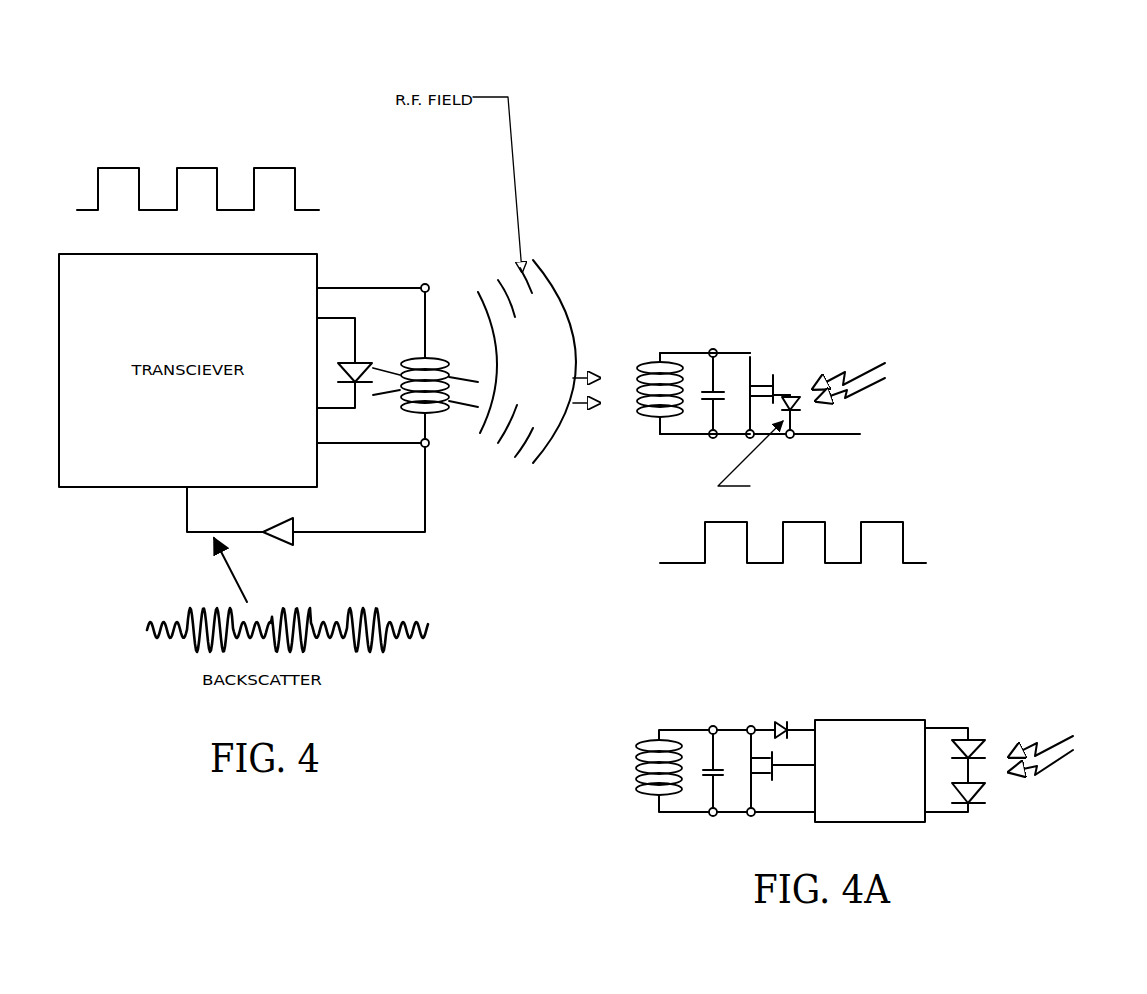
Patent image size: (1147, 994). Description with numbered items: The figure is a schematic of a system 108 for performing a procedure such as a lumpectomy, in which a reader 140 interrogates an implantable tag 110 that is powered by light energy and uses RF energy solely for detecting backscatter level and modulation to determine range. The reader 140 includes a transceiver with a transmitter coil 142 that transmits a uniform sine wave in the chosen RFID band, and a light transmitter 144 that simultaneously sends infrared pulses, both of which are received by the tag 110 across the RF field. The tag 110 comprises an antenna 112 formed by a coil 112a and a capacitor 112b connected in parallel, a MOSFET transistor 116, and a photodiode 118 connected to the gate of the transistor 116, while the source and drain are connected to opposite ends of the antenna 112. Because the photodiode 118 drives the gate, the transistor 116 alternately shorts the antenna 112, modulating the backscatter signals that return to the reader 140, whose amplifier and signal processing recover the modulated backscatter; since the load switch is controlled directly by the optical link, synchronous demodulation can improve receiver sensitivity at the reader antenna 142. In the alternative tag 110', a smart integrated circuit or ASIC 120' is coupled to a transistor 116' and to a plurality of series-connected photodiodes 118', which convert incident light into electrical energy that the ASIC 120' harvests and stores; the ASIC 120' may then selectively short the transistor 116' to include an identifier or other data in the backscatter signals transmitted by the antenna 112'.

In FIG. 4, the system 108 is at (630, 158).
In FIG. 4, the tag 110 is at (861, 378).
In FIG. 4, the antenna 112 is at (692, 427).
In FIG. 4, the coil 112a is at (652, 363).
In FIG. 4, the capacitor 112b is at (715, 378).
In FIG. 4, the transistor 116 is at (784, 345).
In FIG. 4, the photodiode 118 is at (832, 429).
In FIG. 4, the reader 140 is at (137, 122).
In FIG. 4, the transmitter coil 142 is at (438, 413).
In FIG. 4, the light transmitter 144 is at (361, 350).
In FIG. 4A, the tag 110' is at (839, 716).
In FIG. 4A, the antenna 112' is at (639, 814).
In FIG. 4A, the transistor 116' is at (749, 801).
In FIG. 4A, the photodiodes 118' is at (1016, 733).
In FIG. 4A, the ASIC 120' is at (870, 738).